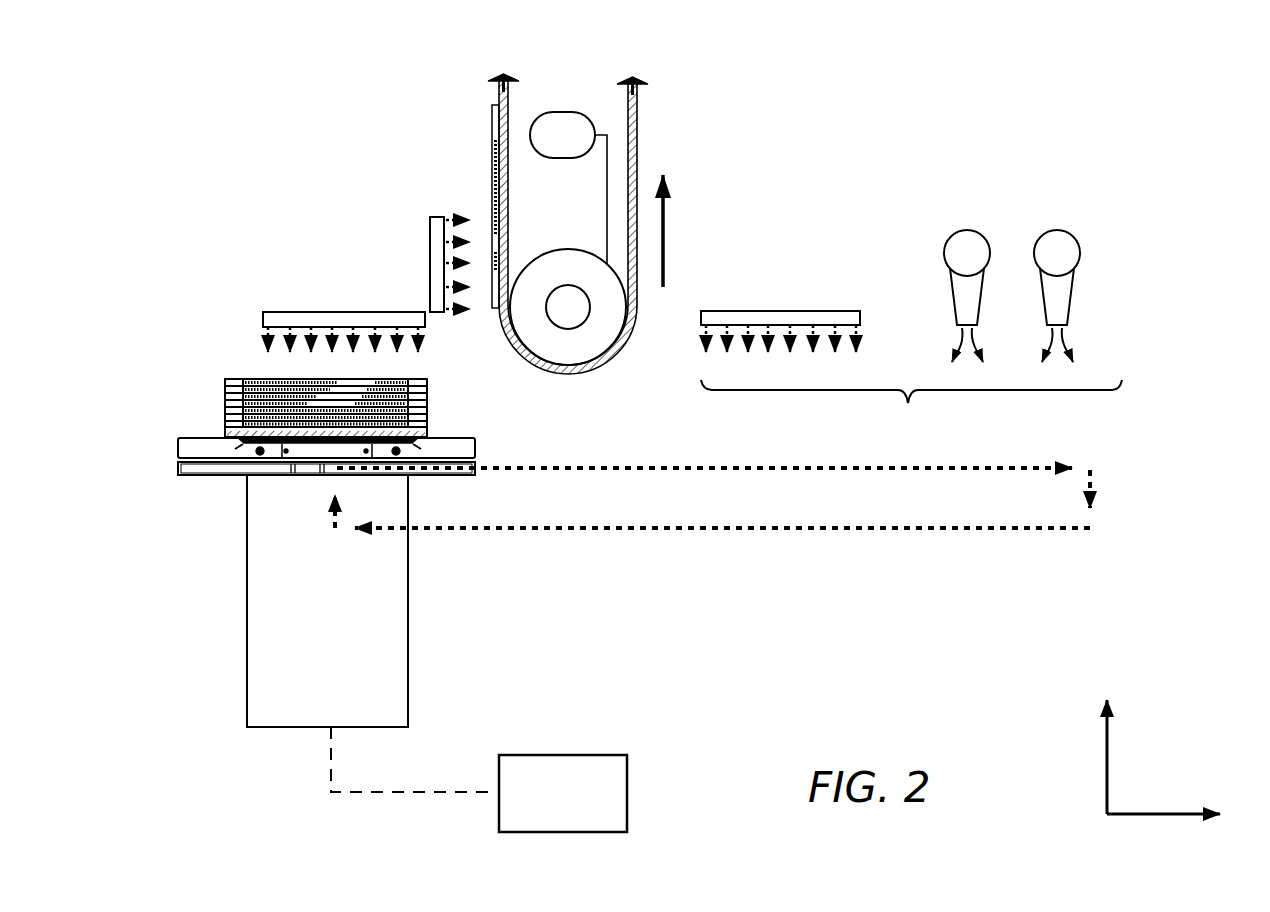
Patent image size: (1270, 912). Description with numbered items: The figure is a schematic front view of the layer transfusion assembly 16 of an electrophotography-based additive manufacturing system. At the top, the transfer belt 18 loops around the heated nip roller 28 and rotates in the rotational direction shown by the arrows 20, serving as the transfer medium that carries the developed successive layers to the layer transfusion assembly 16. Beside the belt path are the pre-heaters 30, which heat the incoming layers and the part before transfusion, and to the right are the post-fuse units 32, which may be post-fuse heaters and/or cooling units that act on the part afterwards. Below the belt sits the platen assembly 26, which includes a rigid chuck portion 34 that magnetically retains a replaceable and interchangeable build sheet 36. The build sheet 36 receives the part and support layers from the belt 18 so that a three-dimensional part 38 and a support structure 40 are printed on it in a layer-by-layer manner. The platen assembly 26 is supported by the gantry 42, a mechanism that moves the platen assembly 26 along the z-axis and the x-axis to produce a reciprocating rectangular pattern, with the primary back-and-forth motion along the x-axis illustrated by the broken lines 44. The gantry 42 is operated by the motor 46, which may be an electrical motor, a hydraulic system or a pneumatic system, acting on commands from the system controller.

The layer transfusion assembly 16 is at (1160, 551).
The transfer belt 18 is at (470, 98).
The arrows 20 is at (663, 200).
The platen assembly 26 is at (183, 495).
The heated nip roller 28 is at (522, 262).
The pre-heaters 30 is at (331, 298).
The post-fuse units 32 is at (911, 332).
The rigid chuck portion 34 is at (178, 455).
The build sheet 36 is at (462, 437).
The 3D part 38 is at (258, 378).
The support structure 40 is at (225, 404).
The gantry 42 is at (408, 684).
The broken lines 44 is at (822, 534).
The motor 46 is at (627, 778).